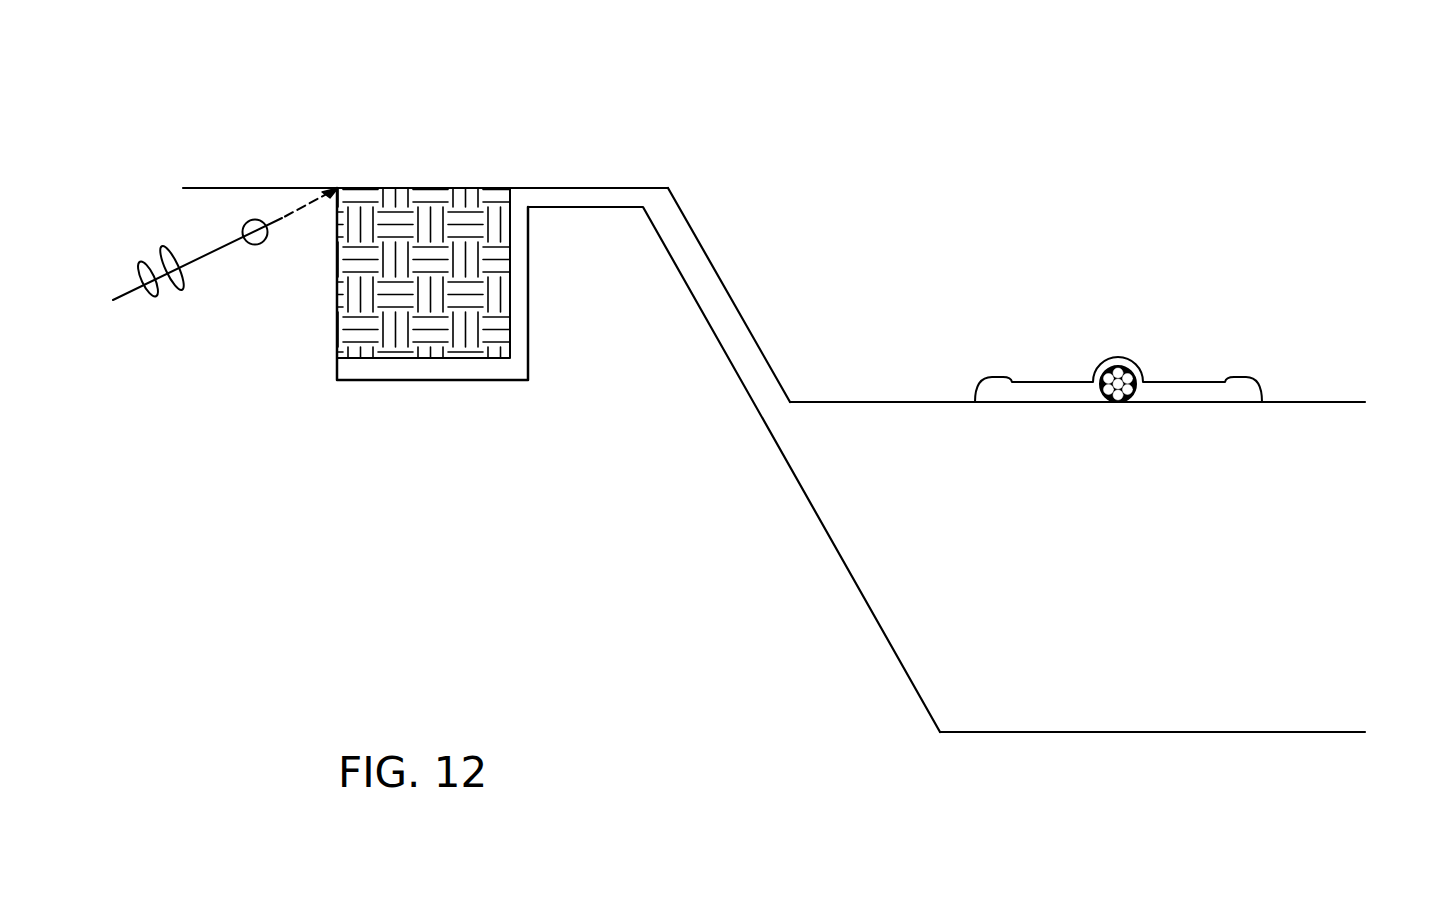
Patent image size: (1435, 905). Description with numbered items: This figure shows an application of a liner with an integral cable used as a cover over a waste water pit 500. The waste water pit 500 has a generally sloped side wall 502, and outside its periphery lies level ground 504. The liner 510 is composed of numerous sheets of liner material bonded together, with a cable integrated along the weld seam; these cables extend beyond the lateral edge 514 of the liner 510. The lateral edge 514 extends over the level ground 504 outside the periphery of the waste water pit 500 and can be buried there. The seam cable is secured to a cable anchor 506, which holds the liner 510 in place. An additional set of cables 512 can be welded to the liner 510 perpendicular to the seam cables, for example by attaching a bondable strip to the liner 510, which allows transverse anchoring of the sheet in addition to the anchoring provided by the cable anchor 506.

The waste water pit 500 is at (1152, 651).
The sloped side wall 502 is at (862, 592).
The level ground 504 is at (217, 188).
The cable anchor 506 is at (217, 253).
The liner 510 is at (1313, 400).
The additional set of cables 512 is at (1175, 382).
The lateral edge 514 is at (417, 338).